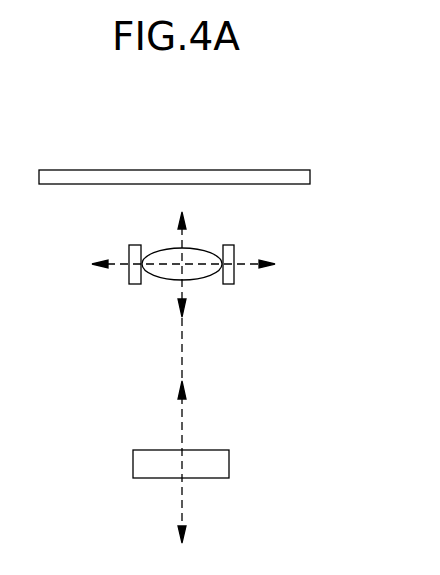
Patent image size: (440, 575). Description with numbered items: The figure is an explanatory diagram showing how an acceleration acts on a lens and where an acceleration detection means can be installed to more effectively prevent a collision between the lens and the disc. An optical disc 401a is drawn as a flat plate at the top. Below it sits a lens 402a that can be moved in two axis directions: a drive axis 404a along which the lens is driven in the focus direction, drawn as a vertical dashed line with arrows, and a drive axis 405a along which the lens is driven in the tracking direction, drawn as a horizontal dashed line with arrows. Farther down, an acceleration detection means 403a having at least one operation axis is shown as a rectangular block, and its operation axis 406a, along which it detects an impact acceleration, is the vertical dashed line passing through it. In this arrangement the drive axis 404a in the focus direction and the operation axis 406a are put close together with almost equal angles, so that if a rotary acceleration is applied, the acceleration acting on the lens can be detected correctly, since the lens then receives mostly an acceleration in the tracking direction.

The optical disc 401a is at (228, 170).
The lens 402a is at (160, 278).
The acceleration detection means 403a is at (133, 465).
The drive axis 404a is at (182, 287).
The drive axis 405a is at (243, 262).
The operation axis 406a is at (182, 422).